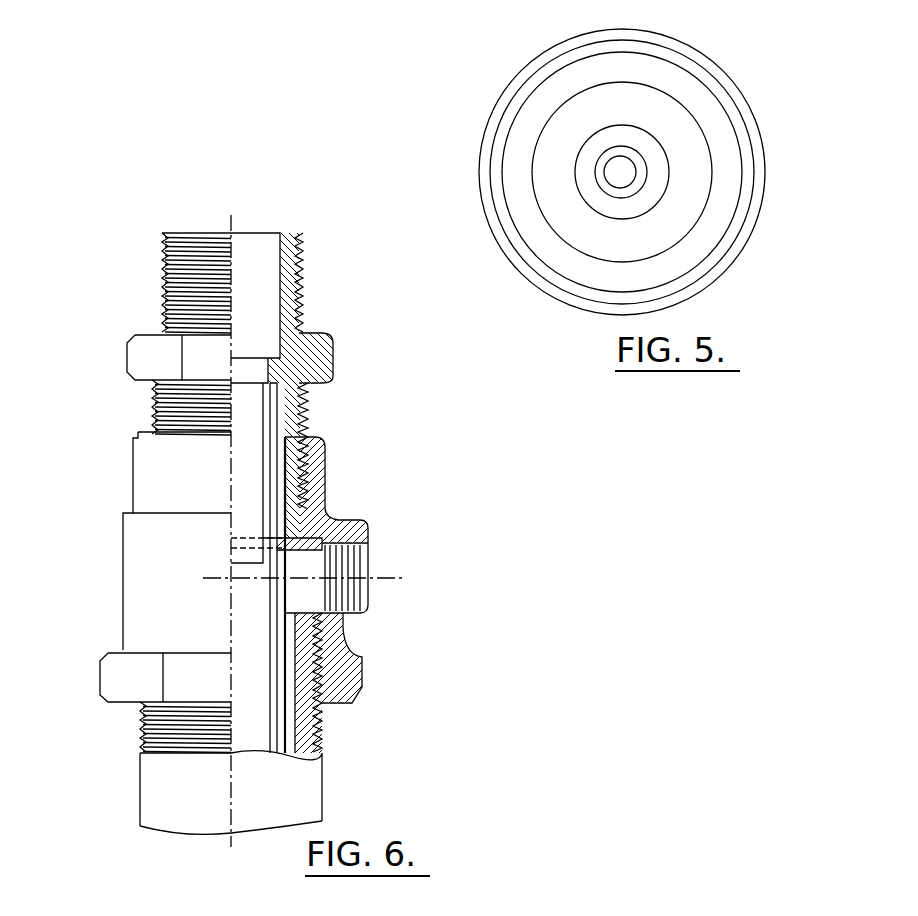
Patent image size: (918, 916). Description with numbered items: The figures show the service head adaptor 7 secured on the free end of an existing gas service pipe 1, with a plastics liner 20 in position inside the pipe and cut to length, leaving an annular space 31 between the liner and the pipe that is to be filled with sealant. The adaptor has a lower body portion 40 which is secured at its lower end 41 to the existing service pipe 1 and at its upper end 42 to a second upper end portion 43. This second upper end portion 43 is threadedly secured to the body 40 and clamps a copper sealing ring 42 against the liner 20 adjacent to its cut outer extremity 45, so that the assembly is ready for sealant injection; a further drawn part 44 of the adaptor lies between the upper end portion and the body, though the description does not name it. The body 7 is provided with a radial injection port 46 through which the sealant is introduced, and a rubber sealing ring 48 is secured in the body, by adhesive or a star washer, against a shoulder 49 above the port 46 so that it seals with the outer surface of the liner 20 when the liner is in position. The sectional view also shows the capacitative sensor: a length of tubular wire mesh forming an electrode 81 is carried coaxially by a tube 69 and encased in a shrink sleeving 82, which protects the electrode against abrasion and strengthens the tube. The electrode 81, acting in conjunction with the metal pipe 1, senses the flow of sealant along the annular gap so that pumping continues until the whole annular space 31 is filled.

In FIG. 5, the existing service pipe 1 is at (727, 80).
In FIG. 6, the existing service pipe 1 is at (140, 782).
In FIG. 6, the service head adaptor 7 is at (118, 594).
In FIG. 5, the plastics liner 20 is at (680, 82).
In FIG. 6, the plastics liner 20 is at (293, 728).
In FIG. 5, the annular space 31 is at (732, 110).
In FIG. 6, the lower body portion 40 is at (147, 557).
In FIG. 6, the lower end 41 is at (347, 687).
In FIG. 6, the upper end / copper sealing ring 42 is at (320, 452).
In FIG. 6, the second upper end portion 43 is at (317, 282).
In FIG. 6, the sleeve 44 is at (318, 440).
In FIG. 6, the cut outer extremity 45 is at (322, 342).
In FIG. 6, the radial injection port 46 is at (400, 580).
In FIG. 6, the rubber sealing ring 48 is at (343, 522).
In FIG. 6, the shoulder 49 is at (338, 513).
In FIG. 5, the tube 69 is at (622, 172).
In FIG. 5, the electrode 81 is at (632, 182).
In FIG. 5, the shrink sleeving 82 is at (587, 172).